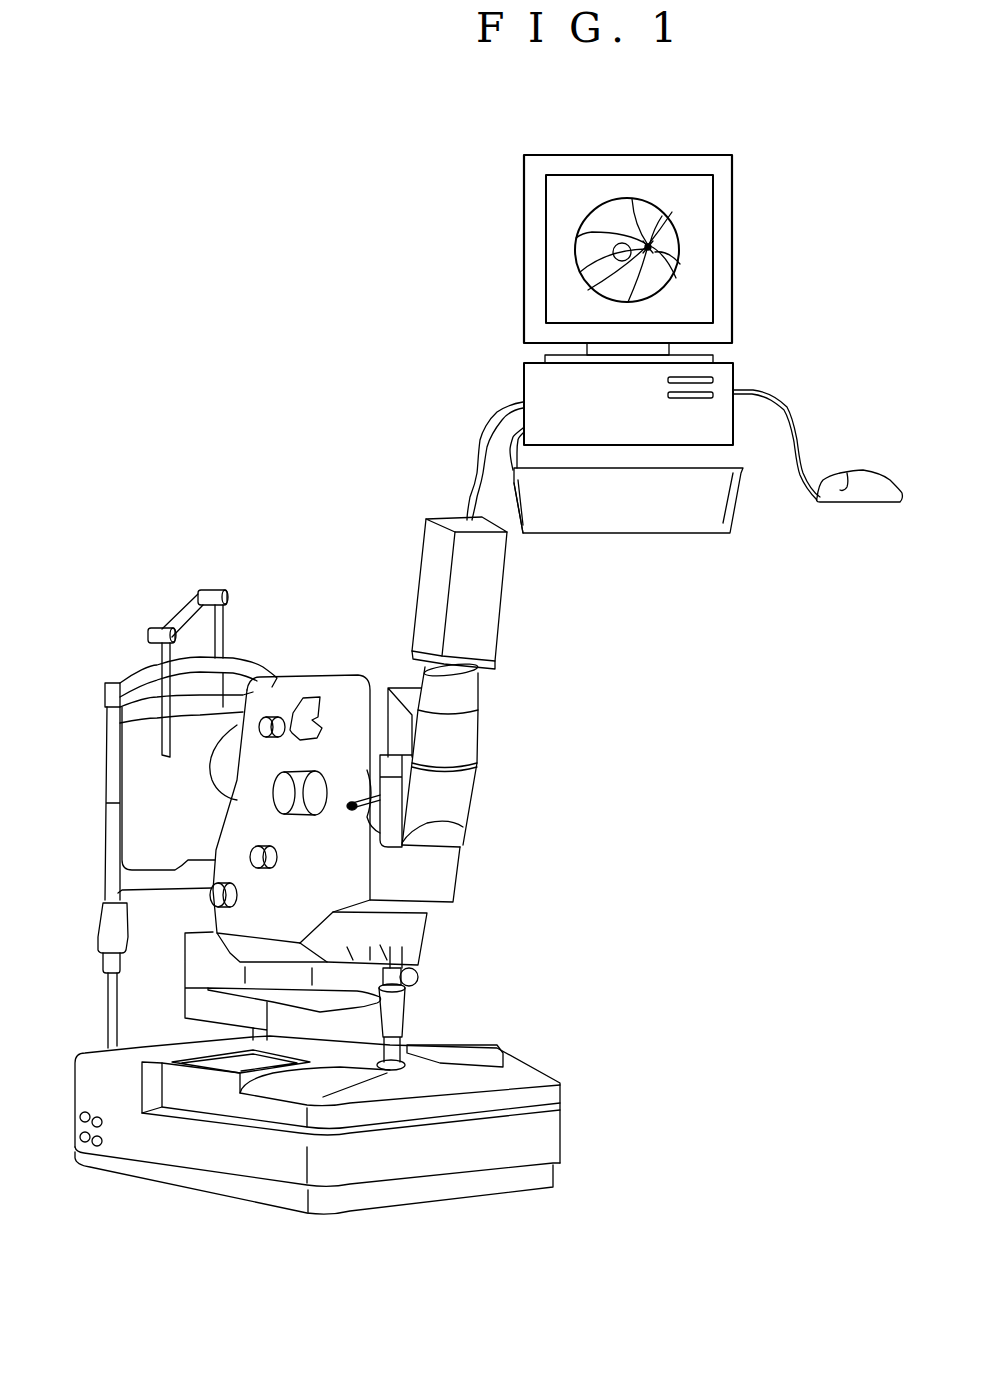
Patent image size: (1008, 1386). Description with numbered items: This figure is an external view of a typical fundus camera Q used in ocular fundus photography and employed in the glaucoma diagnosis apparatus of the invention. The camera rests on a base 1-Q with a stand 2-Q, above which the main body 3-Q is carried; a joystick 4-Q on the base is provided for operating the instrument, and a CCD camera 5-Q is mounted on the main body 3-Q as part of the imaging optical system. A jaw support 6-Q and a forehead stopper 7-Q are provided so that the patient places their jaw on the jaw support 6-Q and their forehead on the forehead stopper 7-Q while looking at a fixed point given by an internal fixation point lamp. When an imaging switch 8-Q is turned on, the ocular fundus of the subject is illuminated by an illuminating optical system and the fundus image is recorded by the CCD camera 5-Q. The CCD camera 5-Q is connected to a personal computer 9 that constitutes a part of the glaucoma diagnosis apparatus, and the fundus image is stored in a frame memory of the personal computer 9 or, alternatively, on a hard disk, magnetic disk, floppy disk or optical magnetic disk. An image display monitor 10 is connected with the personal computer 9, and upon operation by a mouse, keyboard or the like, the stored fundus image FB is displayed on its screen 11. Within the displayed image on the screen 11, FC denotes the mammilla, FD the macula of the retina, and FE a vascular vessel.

The fundus camera Q is at (487, 811).
The base 1-Q is at (547, 1140).
The stand 2-Q is at (447, 1112).
The main body 3-Q is at (353, 872).
The joystick 4-Q is at (398, 1017).
The CCD camera 5-Q is at (427, 597).
The jaw support 6-Q is at (187, 872).
The forehead stopper 7-Q is at (223, 707).
The imaging switch 8-Q is at (407, 975).
The personal computer 9 is at (533, 380).
The image display monitor 10 is at (725, 252).
The screen 11 is at (553, 188).
The fundus image FB is at (567, 242).
The mammilla FC is at (653, 247).
The macula of retina FD is at (613, 253).
The vascular vessel FE is at (653, 222).